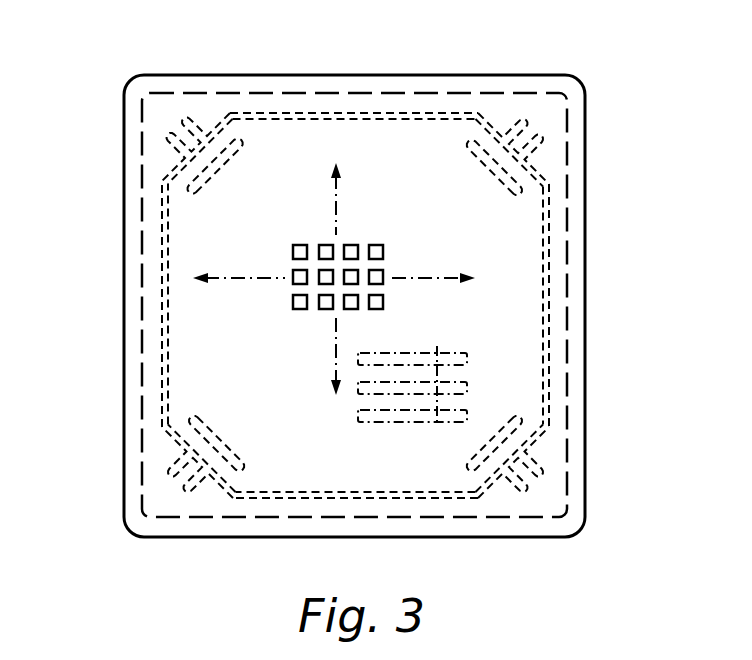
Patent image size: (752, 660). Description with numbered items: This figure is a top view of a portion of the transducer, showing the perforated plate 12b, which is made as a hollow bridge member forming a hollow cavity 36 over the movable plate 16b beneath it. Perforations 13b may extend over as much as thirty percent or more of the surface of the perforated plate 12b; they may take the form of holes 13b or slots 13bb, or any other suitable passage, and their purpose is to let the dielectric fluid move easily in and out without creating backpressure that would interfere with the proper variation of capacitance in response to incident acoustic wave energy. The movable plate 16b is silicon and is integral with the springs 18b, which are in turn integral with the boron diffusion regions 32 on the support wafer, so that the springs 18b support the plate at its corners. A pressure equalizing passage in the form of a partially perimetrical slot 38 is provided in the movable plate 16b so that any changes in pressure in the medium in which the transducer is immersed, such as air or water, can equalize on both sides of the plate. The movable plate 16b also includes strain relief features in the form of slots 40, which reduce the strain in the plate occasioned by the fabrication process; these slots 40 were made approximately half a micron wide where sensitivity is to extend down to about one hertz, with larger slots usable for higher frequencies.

The perforated plate 12b is at (433, 70).
The perforations 13b is at (375, 243).
The slots 13bb is at (415, 380).
The movable plate 16b is at (524, 321).
The springs 18b is at (178, 120).
The boron diffusion regions 32 is at (191, 99).
The hollow cavity 36 is at (505, 112).
The partially perimetrical slot 38 is at (165, 325).
The slots 40 is at (207, 186).